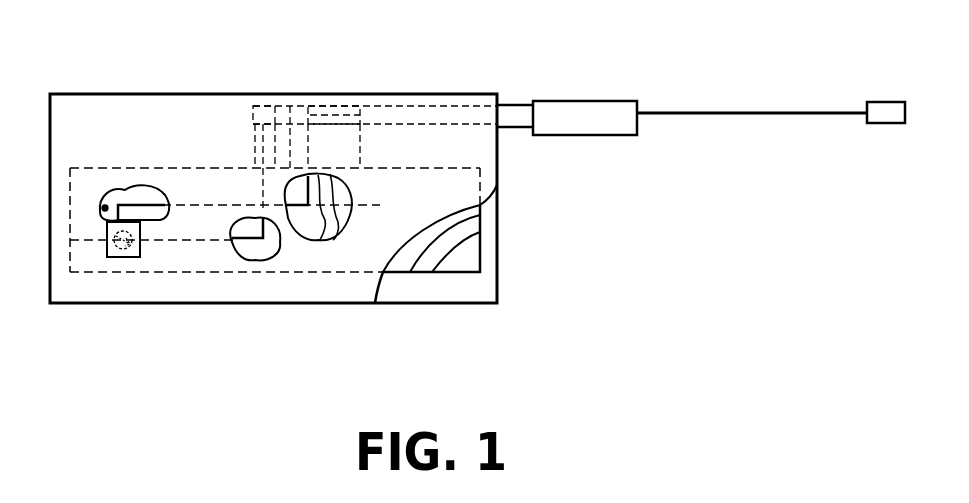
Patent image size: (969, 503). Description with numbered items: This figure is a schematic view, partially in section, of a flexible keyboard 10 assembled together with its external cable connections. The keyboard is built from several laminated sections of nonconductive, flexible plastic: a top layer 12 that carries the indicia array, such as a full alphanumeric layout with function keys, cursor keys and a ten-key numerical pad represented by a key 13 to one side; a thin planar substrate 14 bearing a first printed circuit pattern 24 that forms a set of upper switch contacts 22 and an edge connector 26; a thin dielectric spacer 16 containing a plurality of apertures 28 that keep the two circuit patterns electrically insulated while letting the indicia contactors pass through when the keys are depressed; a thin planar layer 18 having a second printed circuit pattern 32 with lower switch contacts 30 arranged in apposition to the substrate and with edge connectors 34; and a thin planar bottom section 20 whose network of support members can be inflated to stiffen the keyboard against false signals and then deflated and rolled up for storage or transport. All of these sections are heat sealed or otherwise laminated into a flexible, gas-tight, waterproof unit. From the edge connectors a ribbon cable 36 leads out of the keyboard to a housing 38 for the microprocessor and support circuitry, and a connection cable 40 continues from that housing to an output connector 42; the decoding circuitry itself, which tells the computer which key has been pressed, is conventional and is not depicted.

The keyboard 10 is at (228, 72).
The top layer section 12 is at (348, 292).
The key 13 is at (105, 240).
The substrate section 14 is at (102, 208).
The dielectric spacer section 16 is at (106, 210).
The lower circuit layer section 18 is at (106, 212).
The bottom section 20 is at (490, 284).
The upper switch contacts 22 is at (115, 258).
The first printed circuit pattern 24 is at (234, 250).
The edge connector 26 is at (255, 100).
The apertures 28 is at (128, 258).
The lower switch contacts 30 is at (52, 220).
The second printed circuit pattern 32 is at (152, 187).
The edge connectors 34 is at (345, 108).
The ribbon cable 36 is at (521, 112).
The housing for microprocessor and support circuitry 38 is at (583, 110).
The connection cable 40 is at (715, 112).
The output connector 42 is at (875, 108).